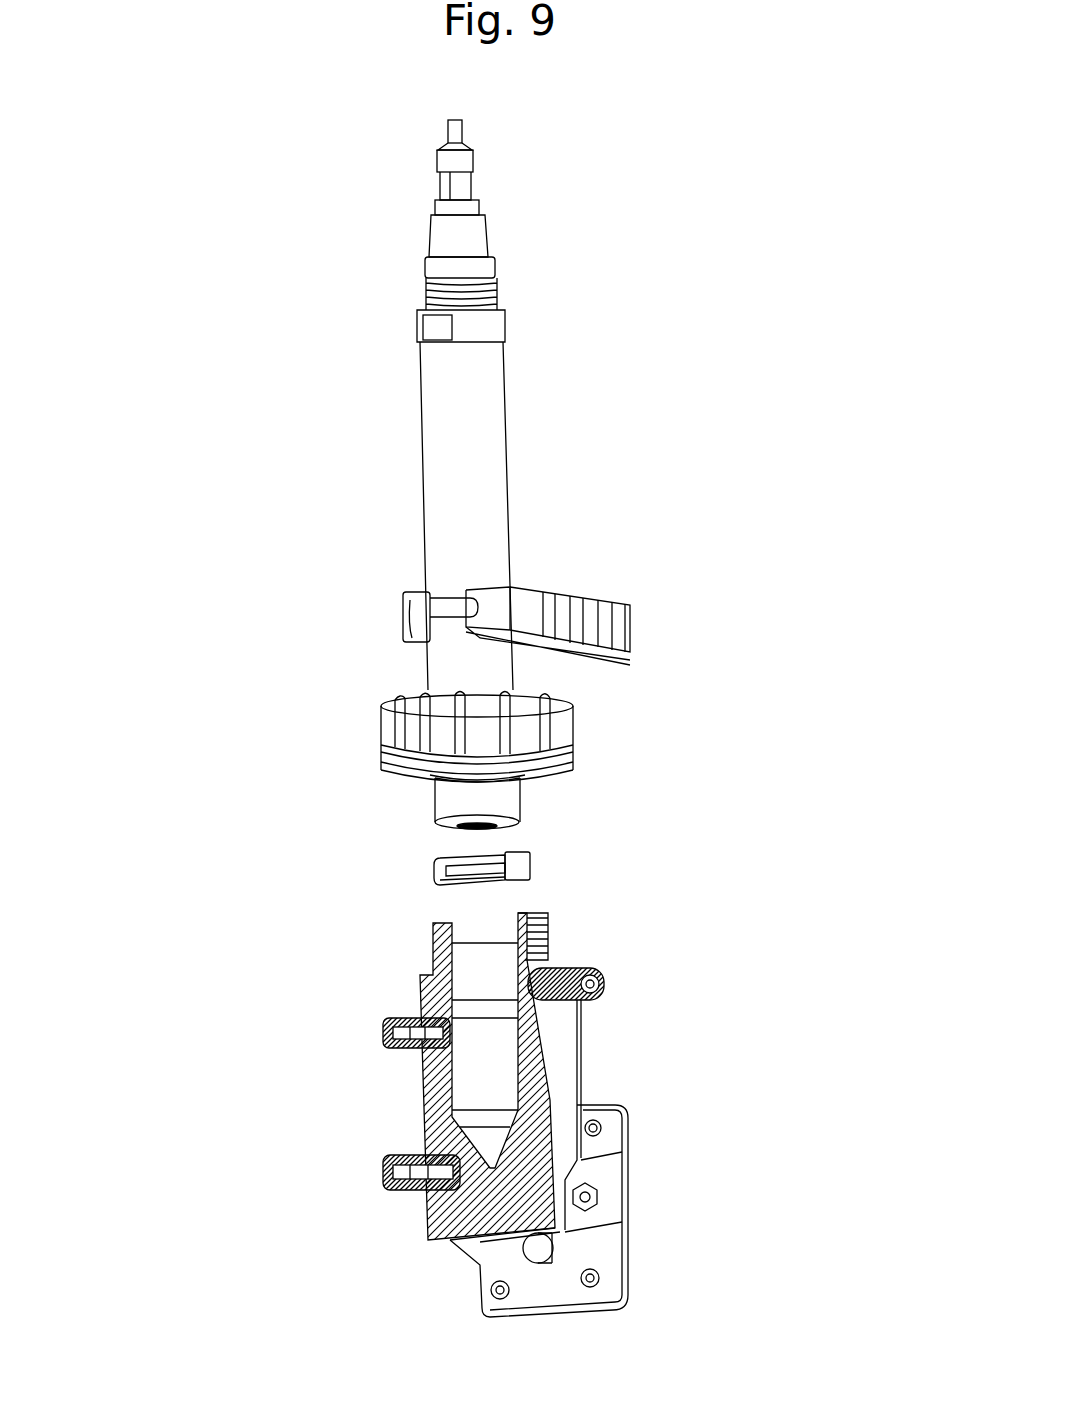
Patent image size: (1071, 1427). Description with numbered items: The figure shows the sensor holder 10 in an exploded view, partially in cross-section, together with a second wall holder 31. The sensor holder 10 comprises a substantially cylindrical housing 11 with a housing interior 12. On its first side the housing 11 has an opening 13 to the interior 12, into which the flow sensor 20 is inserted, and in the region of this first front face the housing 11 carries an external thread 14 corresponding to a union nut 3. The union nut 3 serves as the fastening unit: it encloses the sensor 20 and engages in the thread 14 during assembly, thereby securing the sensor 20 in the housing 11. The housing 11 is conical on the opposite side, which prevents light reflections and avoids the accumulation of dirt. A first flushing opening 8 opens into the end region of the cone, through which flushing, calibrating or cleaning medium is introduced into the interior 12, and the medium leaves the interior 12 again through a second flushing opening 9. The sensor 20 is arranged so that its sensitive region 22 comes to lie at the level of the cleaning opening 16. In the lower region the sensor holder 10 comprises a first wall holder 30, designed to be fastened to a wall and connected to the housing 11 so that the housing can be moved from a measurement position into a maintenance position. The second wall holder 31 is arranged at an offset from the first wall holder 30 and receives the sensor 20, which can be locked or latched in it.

The sensor holder 10 is at (187, 253).
The flow sensor 20 is at (490, 418).
The second wall holder 31 is at (645, 630).
The union nut 3 is at (522, 737).
The sensitive region 22 is at (465, 838).
The opening 13 is at (462, 928).
The external thread 14 is at (560, 925).
The second flushing opening 9 is at (610, 990).
The cleaning opening 16 is at (370, 1038).
The housing interior 12 is at (490, 1073).
The housing 11 is at (442, 1098).
The first flushing opening 8 is at (370, 1178).
The first wall holder 30 is at (620, 1182).